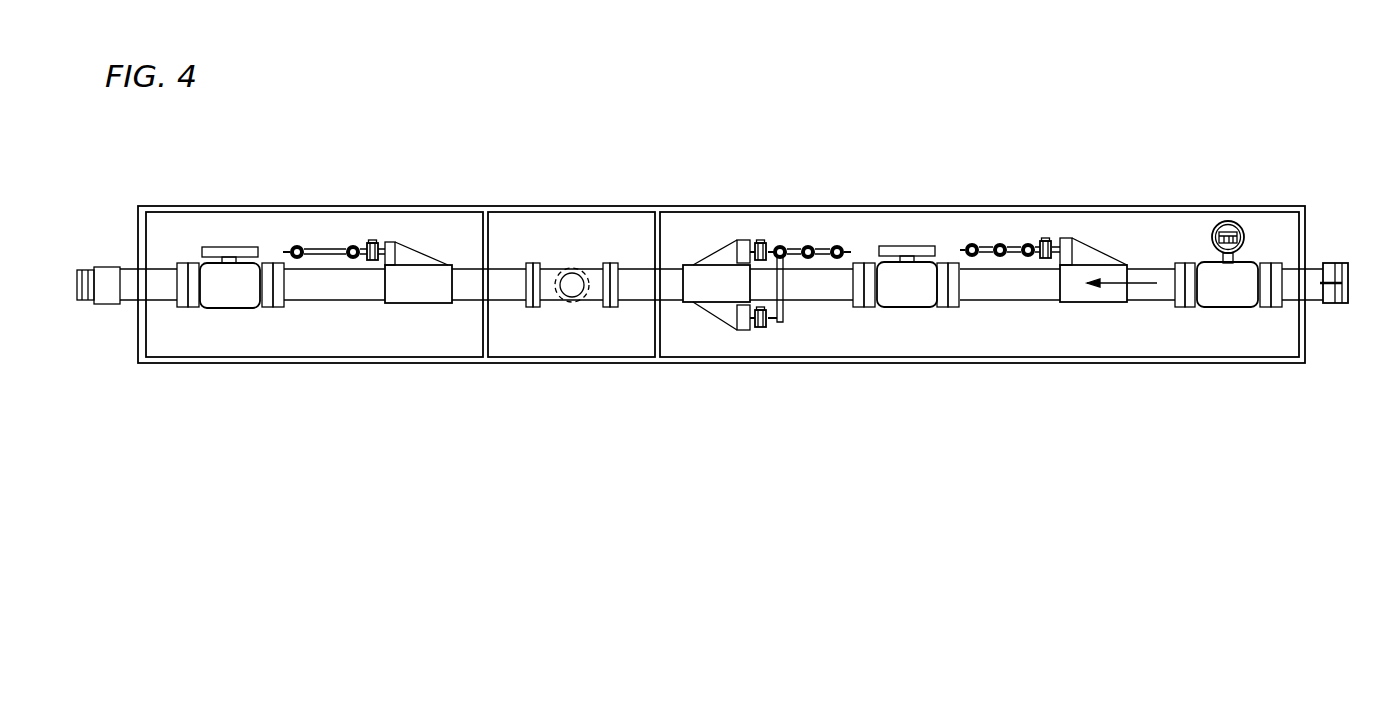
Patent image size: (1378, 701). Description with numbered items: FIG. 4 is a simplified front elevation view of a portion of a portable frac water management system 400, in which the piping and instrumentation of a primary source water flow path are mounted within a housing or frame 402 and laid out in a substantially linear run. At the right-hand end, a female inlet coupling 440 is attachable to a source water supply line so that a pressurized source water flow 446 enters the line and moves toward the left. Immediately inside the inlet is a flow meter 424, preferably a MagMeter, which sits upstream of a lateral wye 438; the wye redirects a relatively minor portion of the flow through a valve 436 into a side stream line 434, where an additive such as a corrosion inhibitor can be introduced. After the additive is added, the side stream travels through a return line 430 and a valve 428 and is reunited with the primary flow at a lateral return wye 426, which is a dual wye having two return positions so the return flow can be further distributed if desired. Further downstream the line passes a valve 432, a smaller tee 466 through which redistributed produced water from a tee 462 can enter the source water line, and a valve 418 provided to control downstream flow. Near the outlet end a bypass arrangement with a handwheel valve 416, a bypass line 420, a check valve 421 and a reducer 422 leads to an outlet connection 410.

The water metering assembly 400 is at (219, 158).
The housing / enclosure 402 is at (217, 207).
The inlet connection 410 is at (110, 297).
The bypass valve handwheel 416 is at (293, 247).
The valve 418 is at (220, 305).
The bypass line 420 is at (350, 247).
The bypass check valve 421 is at (370, 240).
The inlet reducer / strainer 422 is at (418, 257).
The flow meter 424 is at (1217, 303).
The lateral wye 426 is at (733, 252).
The valve 428 is at (768, 327).
The line 430 is at (782, 244).
The intermediate shutoff valve 432 is at (895, 302).
The line 434 is at (1033, 243).
The valve 436 is at (1053, 238).
The lateral wye 438 is at (1093, 257).
The female inlet coupling 440 is at (1340, 303).
The pressurized source water flow 446 is at (1117, 285).
The tee 462 is at (587, 290).
The smaller tee 466 is at (550, 300).